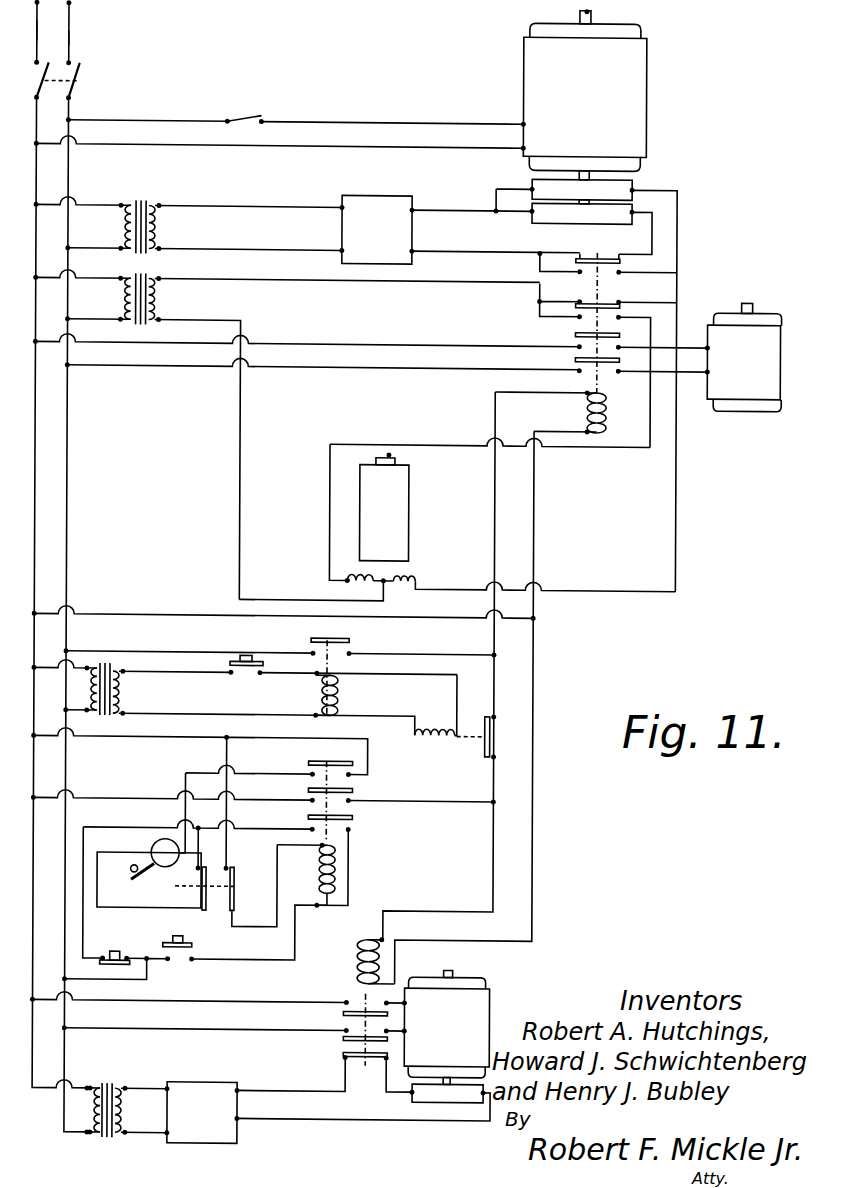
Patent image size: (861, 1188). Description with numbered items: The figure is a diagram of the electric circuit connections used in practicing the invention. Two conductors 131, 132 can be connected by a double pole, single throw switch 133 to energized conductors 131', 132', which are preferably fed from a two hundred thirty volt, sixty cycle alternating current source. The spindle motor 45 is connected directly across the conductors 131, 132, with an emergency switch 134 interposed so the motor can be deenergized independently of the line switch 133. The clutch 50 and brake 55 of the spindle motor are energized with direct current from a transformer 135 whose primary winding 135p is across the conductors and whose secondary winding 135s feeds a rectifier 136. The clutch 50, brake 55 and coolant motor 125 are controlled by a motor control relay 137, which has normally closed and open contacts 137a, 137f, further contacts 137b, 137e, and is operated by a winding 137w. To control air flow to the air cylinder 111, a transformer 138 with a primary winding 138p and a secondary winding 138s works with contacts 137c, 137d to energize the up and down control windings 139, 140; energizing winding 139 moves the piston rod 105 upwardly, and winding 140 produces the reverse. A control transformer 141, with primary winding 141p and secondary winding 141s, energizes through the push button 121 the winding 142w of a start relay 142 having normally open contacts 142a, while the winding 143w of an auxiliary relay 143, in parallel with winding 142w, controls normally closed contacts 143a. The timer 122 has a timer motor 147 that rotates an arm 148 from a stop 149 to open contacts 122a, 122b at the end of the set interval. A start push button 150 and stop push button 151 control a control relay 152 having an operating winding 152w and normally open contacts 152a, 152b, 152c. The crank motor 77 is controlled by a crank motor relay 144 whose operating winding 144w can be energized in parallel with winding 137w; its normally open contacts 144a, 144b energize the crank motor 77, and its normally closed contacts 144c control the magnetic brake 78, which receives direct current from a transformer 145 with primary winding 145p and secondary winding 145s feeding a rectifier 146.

The conductor 131 is at (77, 545).
The conductor 132 is at (92, 567).
The energized conductor 131' is at (80, 26).
The energized conductor 132' is at (106, 42).
The double pole, single throw switch 133 is at (105, 80).
The emergency switch 134 is at (238, 116).
The transformer 135 is at (187, 211).
The primary winding 135p is at (122, 224).
The secondary winding 135s is at (165, 214).
The rectifier 136 is at (383, 194).
The transformer 138 is at (286, 428).
The primary winding 138p is at (122, 298).
The secondary winding 138s is at (162, 318).
The motor control relay 137 is at (604, 353).
The normally closed contacts 137a is at (612, 248).
The contacts 137b is at (615, 271).
The contacts 137c is at (613, 298).
The contacts 137d is at (616, 310).
The contacts 137e is at (580, 338).
The normally open contacts 137f is at (608, 366).
The winding 137w is at (605, 415).
The spindle motor 45 is at (640, 94).
The clutch 50 is at (630, 180).
The brake 55 is at (630, 206).
The coolant motor 125 is at (762, 396).
The piston rod 105 is at (393, 450).
The air cylinder 111 is at (410, 504).
The up air cylinder control winding 139 is at (350, 584).
The down air cylinder control winding 140 is at (415, 570).
The control transformer 141 is at (173, 669).
The primary winding 141p is at (88, 665).
The secondary winding 141s is at (125, 675).
The push button 121 is at (252, 658).
The start relay 142 is at (279, 677).
The normally open contacts 142a is at (352, 650).
The winding 142w is at (342, 692).
The auxiliary relay 143 is at (444, 726).
The normally closed contacts 143a is at (497, 726).
The winding 143w is at (440, 718).
The timer 122 is at (190, 849).
The contacts 122a is at (208, 862).
The contacts 122b is at (234, 870).
The timer motor 147 is at (157, 847).
The arm 148 is at (148, 870).
The stop 149 is at (134, 871).
The control relay 152 is at (263, 857).
The normally open contacts 152a is at (305, 762).
The normally open contacts 152b is at (305, 789).
The normally open contacts 152c is at (303, 818).
The operating winding 152w is at (342, 871).
The start push button 150 is at (178, 960).
The stop push button 151 is at (104, 964).
The crank motor relay 144 is at (236, 1007).
The normally open contacts 144a is at (348, 998).
The normally open contacts 144b is at (348, 1025).
The normally closed contacts 144c is at (350, 1058).
The operating winding 144w is at (384, 944).
The crank motor 77 is at (487, 996).
The magnetic brake 78 is at (410, 1094).
The transformer 145 is at (90, 1106).
The primary winding 145p is at (92, 1104).
The secondary winding 145s is at (128, 1132).
The rectifier 146 is at (205, 1082).